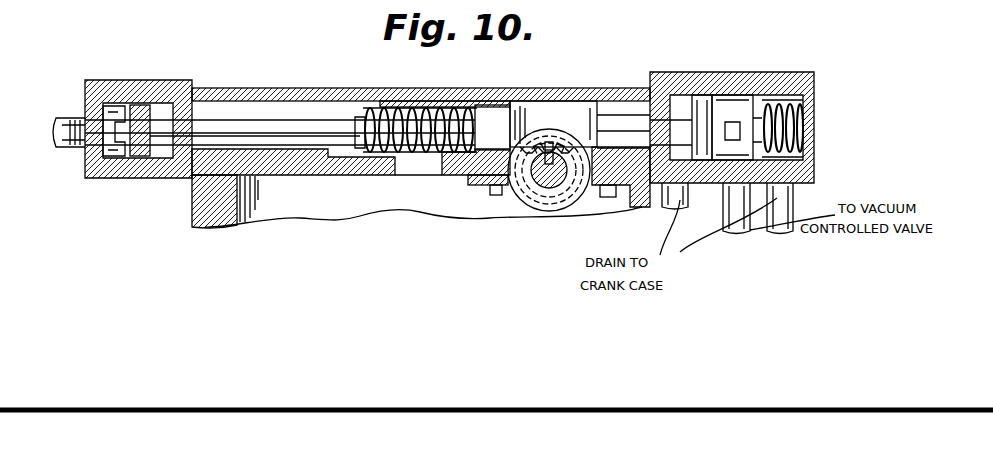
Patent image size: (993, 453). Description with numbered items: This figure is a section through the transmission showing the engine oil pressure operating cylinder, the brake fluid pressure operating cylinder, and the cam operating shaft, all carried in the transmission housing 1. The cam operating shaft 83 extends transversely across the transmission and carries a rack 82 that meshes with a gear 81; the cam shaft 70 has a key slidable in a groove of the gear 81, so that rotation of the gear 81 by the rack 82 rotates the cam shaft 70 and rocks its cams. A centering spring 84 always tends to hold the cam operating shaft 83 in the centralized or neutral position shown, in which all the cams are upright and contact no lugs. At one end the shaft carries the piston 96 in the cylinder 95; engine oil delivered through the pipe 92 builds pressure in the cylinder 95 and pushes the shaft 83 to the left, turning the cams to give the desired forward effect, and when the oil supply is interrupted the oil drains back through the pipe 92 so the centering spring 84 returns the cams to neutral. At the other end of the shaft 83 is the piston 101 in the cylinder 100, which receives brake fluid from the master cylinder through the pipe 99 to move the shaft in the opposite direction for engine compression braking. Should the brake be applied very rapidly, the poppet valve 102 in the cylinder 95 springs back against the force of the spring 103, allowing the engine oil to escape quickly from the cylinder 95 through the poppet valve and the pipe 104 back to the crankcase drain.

The housing 1 is at (350, 175).
The cam shaft 70 is at (548, 183).
The gear 81 is at (530, 160).
The rack 82 is at (545, 112).
The cam operating shaft 83 is at (277, 128).
The centering spring 84 is at (423, 152).
The pipe 92 is at (740, 233).
The cylinder 95 is at (735, 112).
The piston 96 is at (700, 100).
The pipe 99 is at (56, 120).
The cylinder 100 is at (112, 105).
The piston 101 is at (142, 160).
The poppet valve 102 is at (775, 108).
The spring 103 is at (795, 137).
The pipe 104 is at (780, 233).